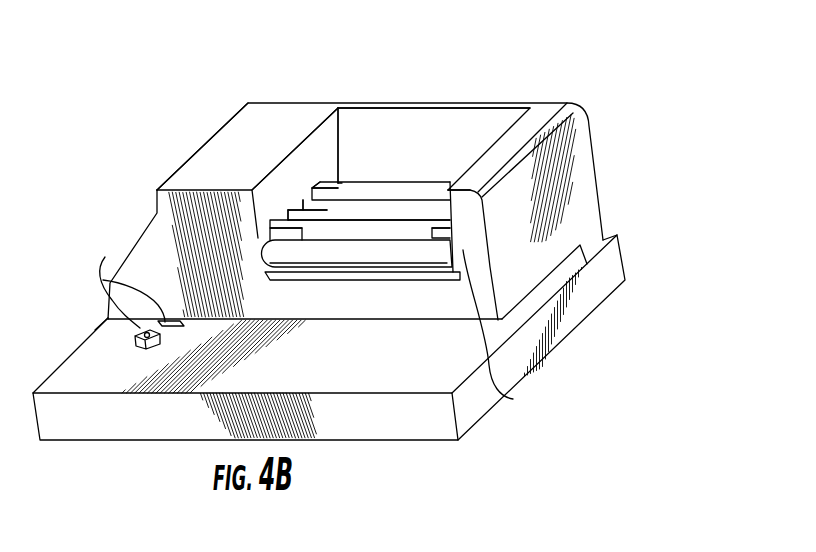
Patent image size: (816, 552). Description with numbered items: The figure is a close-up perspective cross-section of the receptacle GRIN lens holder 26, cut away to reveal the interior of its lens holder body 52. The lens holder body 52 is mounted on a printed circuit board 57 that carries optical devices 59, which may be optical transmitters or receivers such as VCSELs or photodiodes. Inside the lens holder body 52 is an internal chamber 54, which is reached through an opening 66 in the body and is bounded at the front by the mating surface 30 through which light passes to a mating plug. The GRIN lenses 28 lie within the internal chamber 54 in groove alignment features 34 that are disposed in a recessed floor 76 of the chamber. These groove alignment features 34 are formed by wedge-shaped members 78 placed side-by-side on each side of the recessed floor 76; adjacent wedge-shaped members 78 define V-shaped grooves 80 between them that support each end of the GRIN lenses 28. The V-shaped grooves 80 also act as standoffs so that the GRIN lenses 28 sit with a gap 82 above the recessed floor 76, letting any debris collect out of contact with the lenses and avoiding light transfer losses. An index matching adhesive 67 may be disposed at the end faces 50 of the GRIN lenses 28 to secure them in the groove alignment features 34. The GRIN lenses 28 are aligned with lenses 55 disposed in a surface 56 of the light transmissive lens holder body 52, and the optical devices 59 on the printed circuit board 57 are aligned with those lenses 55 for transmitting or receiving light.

The GRIN lens holder 26 is at (354, 86).
The GRIN lenses 28 is at (418, 196).
The mating surface 30 is at (583, 136).
The groove alignment features 34 is at (268, 218).
The end faces 50 is at (461, 248).
The lens holder body 52 is at (260, 110).
The internal chamber 54 is at (413, 166).
The lenses 55 is at (109, 327).
The surface 56 is at (133, 333).
The printed circuit board 57 is at (91, 424).
The optical devices 59 is at (138, 281).
The opening 66 is at (452, 124).
The index matching adhesive 67 is at (513, 398).
The recessed floor 76 is at (356, 252).
The wedge-shaped members 78 is at (333, 187).
The V-shaped grooves 80 is at (346, 188).
The gap 82 is at (409, 276).